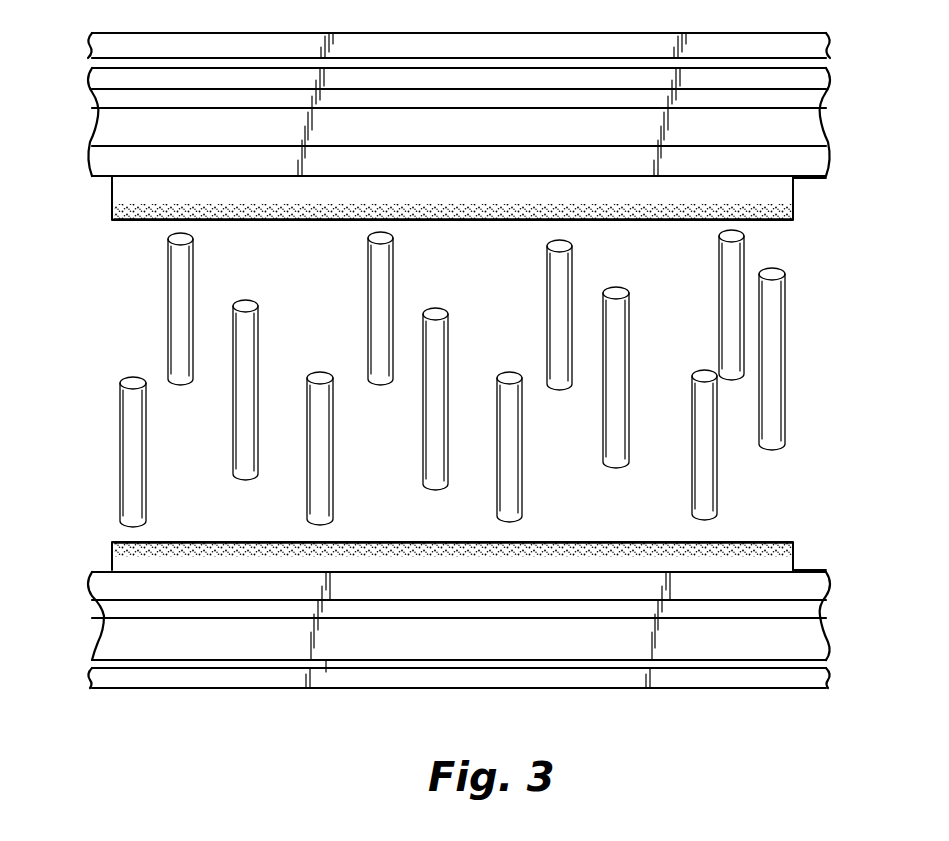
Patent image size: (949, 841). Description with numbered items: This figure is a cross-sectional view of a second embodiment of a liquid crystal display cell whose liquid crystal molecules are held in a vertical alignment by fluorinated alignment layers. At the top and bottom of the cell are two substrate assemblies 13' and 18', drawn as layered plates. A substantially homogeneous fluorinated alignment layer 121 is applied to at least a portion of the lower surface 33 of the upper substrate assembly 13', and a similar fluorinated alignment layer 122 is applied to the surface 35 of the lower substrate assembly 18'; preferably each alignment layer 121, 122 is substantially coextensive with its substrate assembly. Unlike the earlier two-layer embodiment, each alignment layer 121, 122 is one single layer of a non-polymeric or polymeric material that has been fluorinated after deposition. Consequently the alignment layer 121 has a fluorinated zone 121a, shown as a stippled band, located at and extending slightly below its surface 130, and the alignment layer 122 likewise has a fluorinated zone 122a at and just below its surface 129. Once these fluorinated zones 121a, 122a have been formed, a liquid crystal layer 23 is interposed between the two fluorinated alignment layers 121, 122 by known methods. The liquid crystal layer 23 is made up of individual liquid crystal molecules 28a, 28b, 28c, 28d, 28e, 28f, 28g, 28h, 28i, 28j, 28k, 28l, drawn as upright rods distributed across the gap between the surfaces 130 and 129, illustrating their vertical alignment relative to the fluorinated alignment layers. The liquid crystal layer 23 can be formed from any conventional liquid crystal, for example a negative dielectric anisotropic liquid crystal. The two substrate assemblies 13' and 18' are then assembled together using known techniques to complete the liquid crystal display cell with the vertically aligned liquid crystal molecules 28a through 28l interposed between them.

The substrate assembly 13' is at (505, 101).
The substrate assembly 18' is at (505, 628).
The fluorinated alignment layer 121 is at (100, 220).
The fluorinated alignment layer 122 is at (100, 573).
The fluorinated zone 121a is at (281, 222).
The fluorinated zone 122a is at (212, 542).
The surface 130 is at (447, 221).
The surface 129 is at (407, 541).
The lower surface 33 is at (822, 178).
The lower surface 35 is at (822, 570).
The liquid crystal layer 23 is at (100, 533).
The liquid crystal molecule 28a is at (138, 438).
The liquid crystal molecule 28b is at (325, 440).
The liquid crystal molecule 28c is at (514, 468).
The liquid crystal molecule 28d is at (708, 496).
The liquid crystal molecule 28e is at (251, 317).
The liquid crystal molecule 28f is at (441, 330).
The liquid crystal molecule 28g is at (626, 450).
The liquid crystal molecule 28h is at (779, 310).
The liquid crystal molecule 28i is at (173, 300).
The liquid crystal molecule 28j is at (368, 322).
The liquid crystal molecule 28k is at (553, 281).
The liquid crystal molecule 28l is at (722, 276).